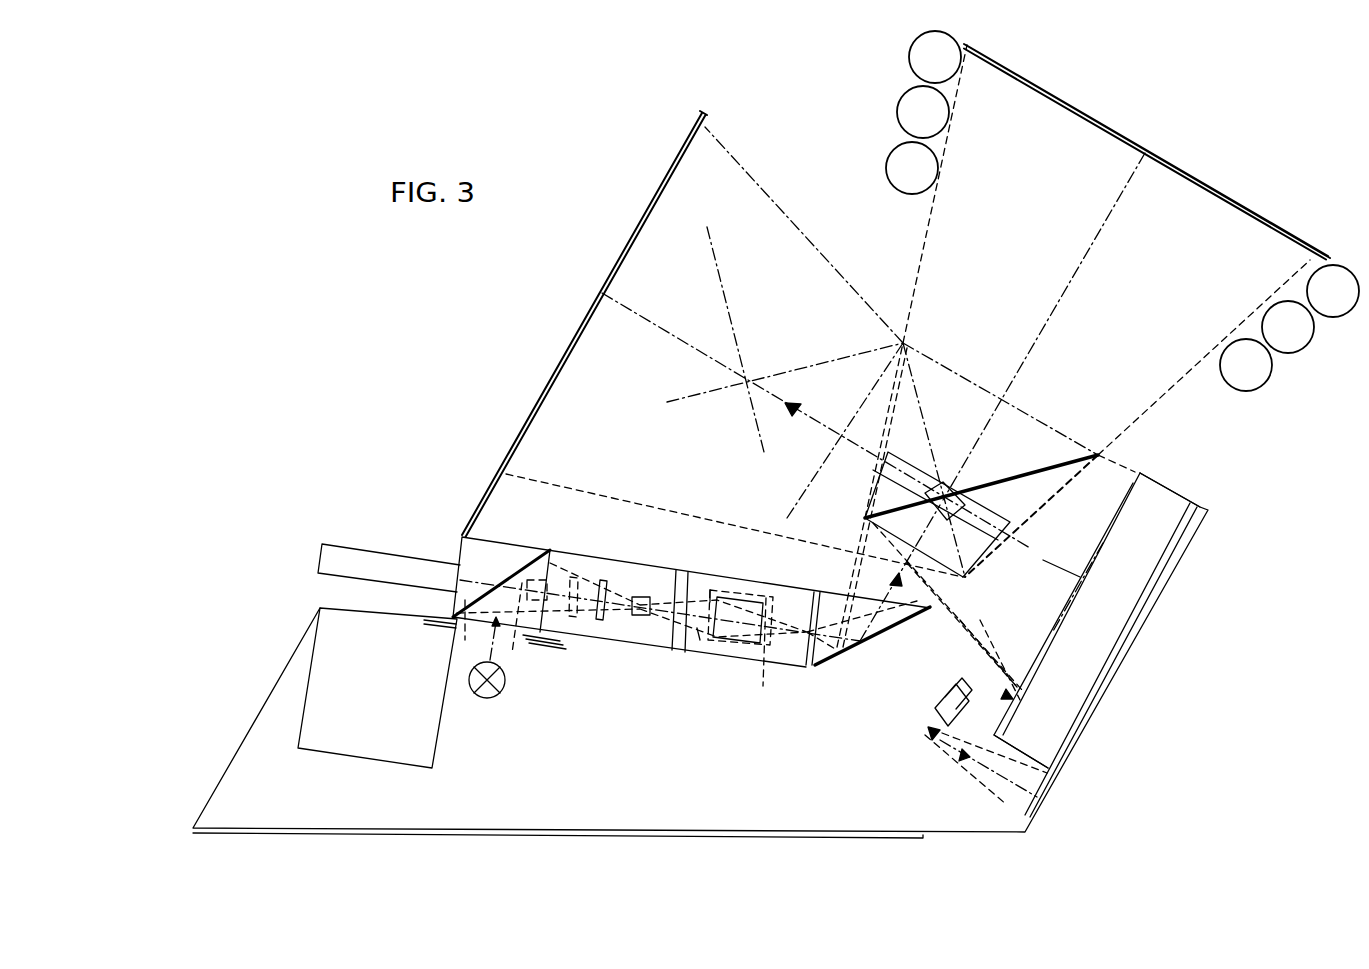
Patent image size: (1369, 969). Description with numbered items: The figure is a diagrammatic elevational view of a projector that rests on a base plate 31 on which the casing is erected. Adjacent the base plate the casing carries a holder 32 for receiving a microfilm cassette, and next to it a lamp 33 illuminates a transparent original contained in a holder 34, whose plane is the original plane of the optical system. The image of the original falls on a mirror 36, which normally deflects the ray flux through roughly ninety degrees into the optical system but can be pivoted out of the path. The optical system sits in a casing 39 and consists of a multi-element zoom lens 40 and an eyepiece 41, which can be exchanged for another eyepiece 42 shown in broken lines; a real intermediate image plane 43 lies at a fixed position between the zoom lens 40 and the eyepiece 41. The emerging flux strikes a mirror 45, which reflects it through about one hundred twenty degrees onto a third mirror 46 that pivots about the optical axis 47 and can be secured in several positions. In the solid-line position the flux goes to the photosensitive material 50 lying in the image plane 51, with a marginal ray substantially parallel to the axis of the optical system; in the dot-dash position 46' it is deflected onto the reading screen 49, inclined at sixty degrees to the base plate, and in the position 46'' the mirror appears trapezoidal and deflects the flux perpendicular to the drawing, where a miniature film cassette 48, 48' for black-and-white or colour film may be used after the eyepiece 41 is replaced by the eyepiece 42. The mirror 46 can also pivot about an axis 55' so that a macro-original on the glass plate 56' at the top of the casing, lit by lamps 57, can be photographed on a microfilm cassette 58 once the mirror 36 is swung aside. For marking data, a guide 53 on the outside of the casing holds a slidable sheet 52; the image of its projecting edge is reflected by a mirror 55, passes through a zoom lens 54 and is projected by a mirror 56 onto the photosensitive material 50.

The base plate 31 is at (641, 830).
The holder 32 is at (377, 688).
The lamp 33 is at (497, 692).
The holder 34 is at (538, 644).
The mirror 36 is at (530, 582).
The casing 39 is at (688, 572).
The multi-element zoom lens 40 is at (636, 616).
The eyepiece 41 is at (730, 635).
The eyepiece 42 is at (764, 656).
The real intermediate image plane 43 is at (705, 635).
The mirror 45 is at (832, 662).
The third mirror 46 is at (1087, 418).
The mirror position 46' is at (904, 495).
The mirror position 46'' is at (882, 311).
The optical axis 47 is at (1015, 377).
The miniature film cassette 48 is at (781, 571).
The miniature film cassette 48' is at (954, 511).
The reading screen 49 is at (551, 377).
The photosensitive material 50 is at (1122, 519).
The image plane 51 is at (1128, 478).
The sheet 52 is at (1030, 808).
The guide 53 is at (1132, 640).
The zoom lens 54 is at (943, 699).
The mirror 55 is at (967, 766).
The axis 55' is at (841, 402).
The mirror 56 is at (979, 660).
The glass plate 56' is at (1147, 152).
The lamps 57 is at (906, 150).
The microfilm cassette 58 is at (398, 563).